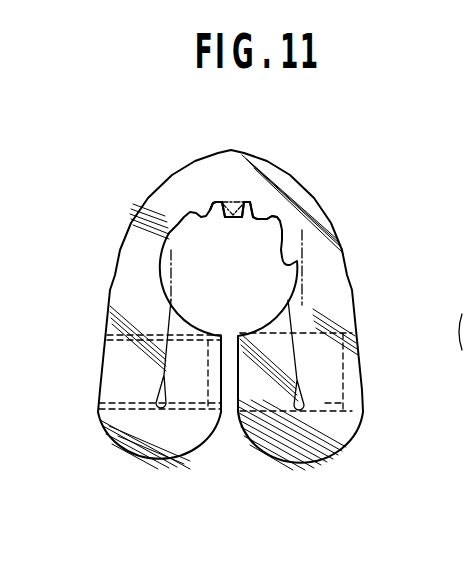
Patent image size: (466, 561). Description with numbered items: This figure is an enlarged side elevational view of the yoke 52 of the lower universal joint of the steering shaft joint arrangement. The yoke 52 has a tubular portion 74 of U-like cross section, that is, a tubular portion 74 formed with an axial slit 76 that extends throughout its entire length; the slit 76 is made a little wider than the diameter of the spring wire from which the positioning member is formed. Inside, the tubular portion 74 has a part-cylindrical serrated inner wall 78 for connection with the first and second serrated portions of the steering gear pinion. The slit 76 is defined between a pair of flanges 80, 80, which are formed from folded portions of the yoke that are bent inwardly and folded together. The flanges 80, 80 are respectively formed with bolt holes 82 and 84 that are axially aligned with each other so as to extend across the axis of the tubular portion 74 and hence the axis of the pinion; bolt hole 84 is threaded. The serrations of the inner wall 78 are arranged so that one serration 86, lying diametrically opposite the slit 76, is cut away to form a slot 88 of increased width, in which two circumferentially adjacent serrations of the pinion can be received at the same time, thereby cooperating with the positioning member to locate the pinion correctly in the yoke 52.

The yoke 52 is at (169, 480).
The tubular portion 74 is at (300, 194).
The axial slit 76 is at (231, 398).
The part-cylindrical serrated inner wall 78 is at (296, 262).
The flange 80 is at (143, 457).
The bolt hole 82 is at (320, 410).
The bolt hole 84 is at (130, 402).
The serration 86 is at (216, 200).
The slot 88 is at (254, 218).